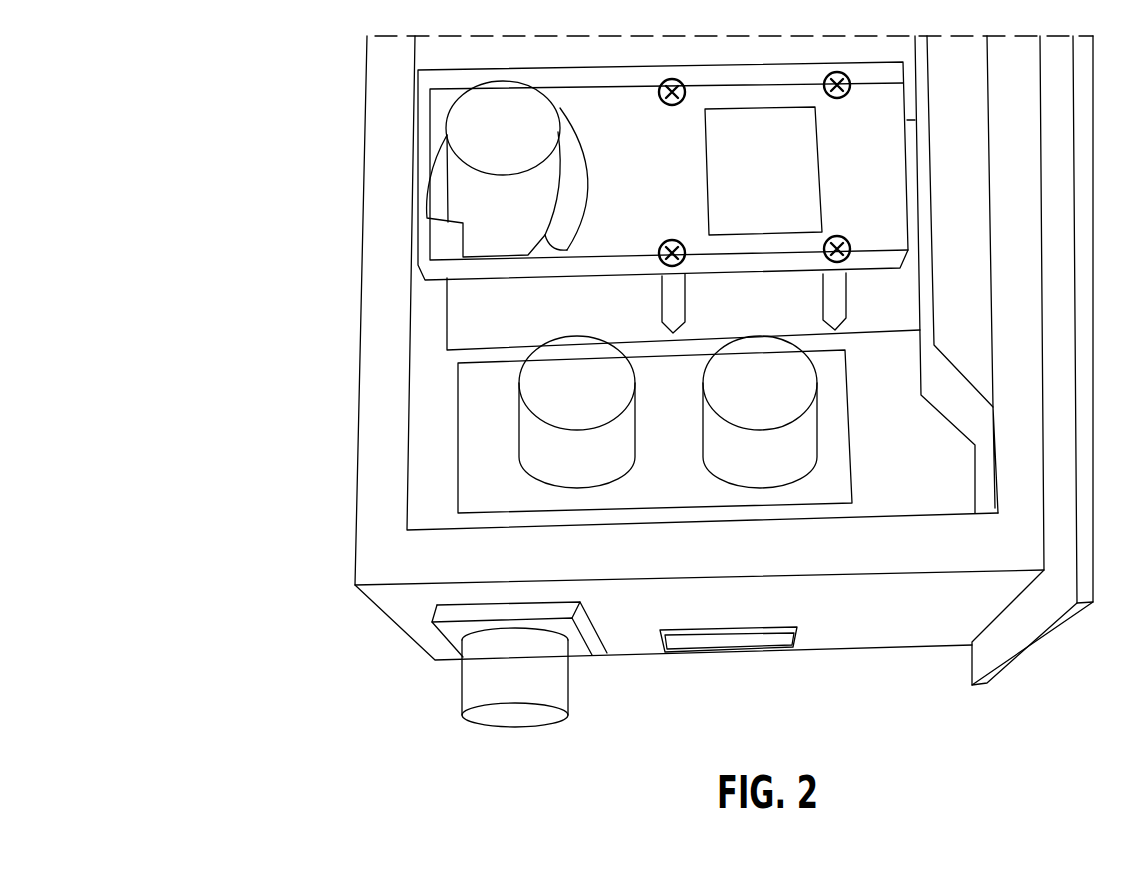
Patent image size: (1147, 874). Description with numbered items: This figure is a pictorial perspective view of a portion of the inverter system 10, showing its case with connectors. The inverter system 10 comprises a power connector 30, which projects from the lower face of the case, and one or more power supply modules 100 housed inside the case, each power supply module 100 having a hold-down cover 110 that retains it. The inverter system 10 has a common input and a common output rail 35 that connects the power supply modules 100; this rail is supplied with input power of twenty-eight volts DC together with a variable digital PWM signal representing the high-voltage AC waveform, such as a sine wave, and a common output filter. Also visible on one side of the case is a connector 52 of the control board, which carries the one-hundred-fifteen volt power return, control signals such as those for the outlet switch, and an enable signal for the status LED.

The inverter system 10 is at (268, 86).
The power connector 30 is at (455, 687).
The common output rail 35 is at (440, 375).
The connector 52 is at (719, 655).
The power supply module 100 is at (412, 208).
The hold-down cover 110 is at (666, 211).